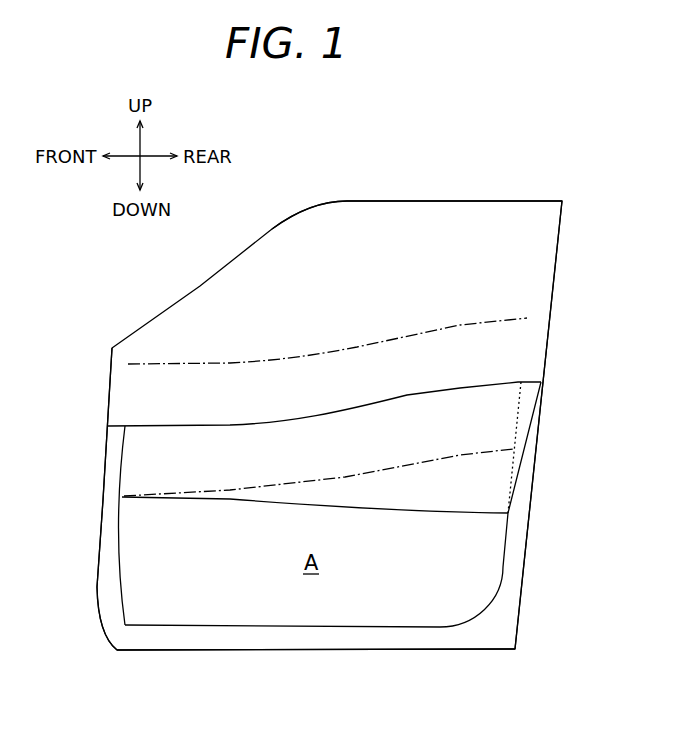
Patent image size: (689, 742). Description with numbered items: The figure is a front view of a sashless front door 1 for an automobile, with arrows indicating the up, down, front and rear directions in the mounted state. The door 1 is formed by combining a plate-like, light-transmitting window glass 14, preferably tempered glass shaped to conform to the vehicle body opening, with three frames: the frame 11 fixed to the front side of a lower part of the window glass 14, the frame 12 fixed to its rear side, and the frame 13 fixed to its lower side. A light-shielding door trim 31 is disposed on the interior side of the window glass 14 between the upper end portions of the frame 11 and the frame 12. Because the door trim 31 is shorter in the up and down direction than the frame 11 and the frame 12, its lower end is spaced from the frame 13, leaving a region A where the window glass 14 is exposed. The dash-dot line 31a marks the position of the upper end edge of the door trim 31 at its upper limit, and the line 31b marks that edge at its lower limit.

The door 1 is at (96, 440).
The frame 11 is at (100, 523).
The frame 12 is at (531, 492).
The frame 13 is at (301, 652).
The window glass 14 is at (395, 201).
The door trim 31 is at (408, 395).
The upper end edge position at upper limit 31a is at (356, 346).
The upper end edge position at lower limit 31b is at (345, 478).